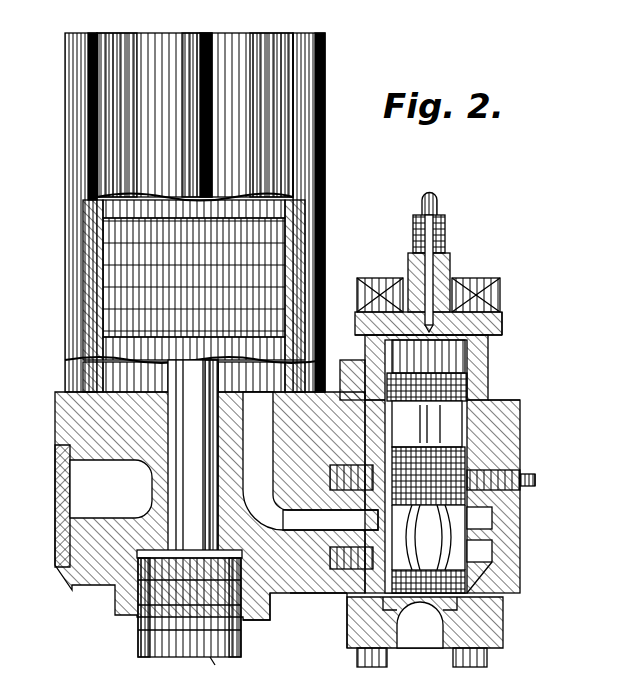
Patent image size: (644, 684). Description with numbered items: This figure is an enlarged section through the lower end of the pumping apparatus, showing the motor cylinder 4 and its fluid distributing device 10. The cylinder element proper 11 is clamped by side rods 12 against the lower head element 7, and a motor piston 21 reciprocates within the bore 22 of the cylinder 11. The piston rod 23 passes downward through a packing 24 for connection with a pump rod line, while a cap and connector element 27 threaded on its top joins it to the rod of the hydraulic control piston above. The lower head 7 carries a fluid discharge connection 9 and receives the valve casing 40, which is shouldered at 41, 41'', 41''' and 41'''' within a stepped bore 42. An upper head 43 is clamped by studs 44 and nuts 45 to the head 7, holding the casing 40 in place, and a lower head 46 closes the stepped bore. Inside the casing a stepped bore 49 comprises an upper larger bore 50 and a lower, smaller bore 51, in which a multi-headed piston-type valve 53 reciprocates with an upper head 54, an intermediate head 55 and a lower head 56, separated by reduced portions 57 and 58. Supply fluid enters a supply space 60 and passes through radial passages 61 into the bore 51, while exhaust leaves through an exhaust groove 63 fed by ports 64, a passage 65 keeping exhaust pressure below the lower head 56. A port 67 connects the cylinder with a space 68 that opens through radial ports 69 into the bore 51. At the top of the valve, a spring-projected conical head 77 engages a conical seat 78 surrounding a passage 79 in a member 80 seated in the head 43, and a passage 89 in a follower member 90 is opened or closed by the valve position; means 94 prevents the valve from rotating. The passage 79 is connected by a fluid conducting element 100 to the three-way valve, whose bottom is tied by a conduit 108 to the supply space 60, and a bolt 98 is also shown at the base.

The motor cylinder 4 is at (110, 112).
The lower head element 7 is at (62, 425).
The fluid discharge connection 9 is at (3, 251).
The fluid distributing device 10 is at (500, 378).
The cylinder element proper 11 is at (85, 232).
The side rods 12 is at (302, 62).
The motor piston 21 is at (112, 298).
The bore 22 is at (95, 350).
The piston rod 23 is at (187, 522).
The packing 24 is at (140, 626).
The cap and connector element 27 is at (180, 208).
The valve casing 40 is at (465, 352).
The shoulder 41 is at (359, 383).
The shoulder 41'' is at (310, 461).
The shoulder 41''' is at (313, 497).
The passage 41'''' is at (335, 555).
The stepped bore 42 is at (385, 372).
The upper head 43 is at (450, 290).
The studs 44 is at (405, 343).
The nuts 45 is at (372, 292).
The lower head 46 is at (484, 652).
The stepped bore 49 is at (352, 612).
The upper larger bore 50 is at (497, 285).
The lower smaller bore 51 is at (500, 615).
The multi-headed piston-type valve 53 is at (494, 388).
The upper head 54 is at (500, 316).
The intermediate head 55 is at (438, 427).
The lower head 56 is at (437, 598).
The reduced portion 57 is at (496, 336).
The reduced portion 58 is at (360, 666).
The supply space 60 is at (476, 478).
The radial passages 61 is at (470, 450).
The exhaust groove 63 is at (315, 593).
The ports 64 is at (467, 562).
The passage 65 is at (412, 600).
The port 67 is at (264, 622).
The space 68 is at (470, 522).
The radial ports 69 is at (468, 534).
The conical head 77 is at (378, 300).
The conical seat 78 is at (390, 303).
The passage 79 is at (455, 300).
The member 80 is at (441, 258).
The passage 89 is at (220, 670).
The follower member 90 is at (175, 678).
The anti-rotation means 94 is at (370, 290).
The bolt 98 is at (455, 678).
The fluid conducting element 100 is at (432, 200).
The conduit 108 is at (527, 488).